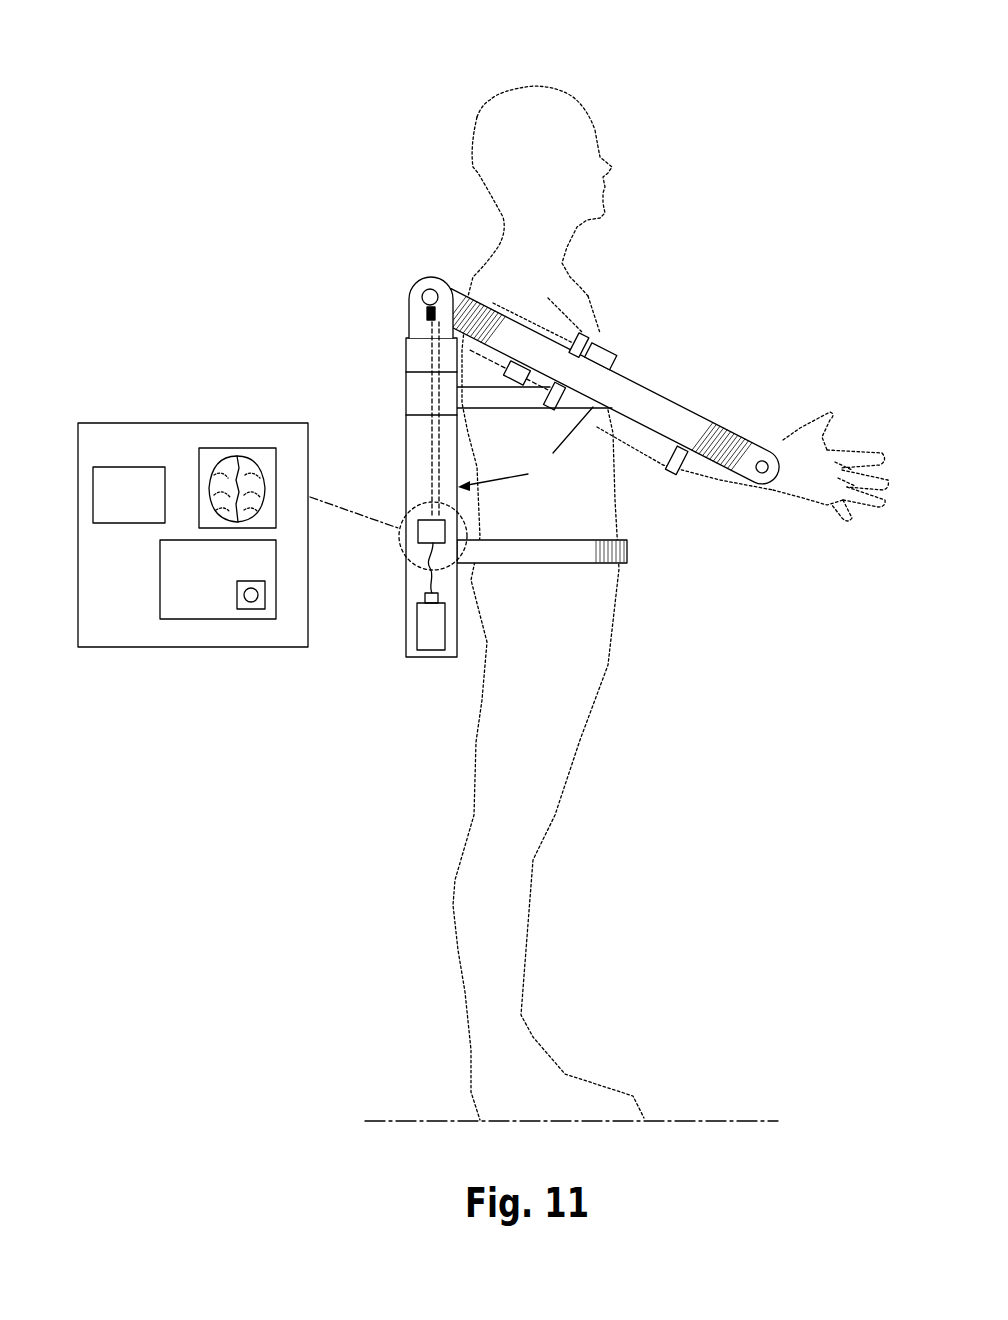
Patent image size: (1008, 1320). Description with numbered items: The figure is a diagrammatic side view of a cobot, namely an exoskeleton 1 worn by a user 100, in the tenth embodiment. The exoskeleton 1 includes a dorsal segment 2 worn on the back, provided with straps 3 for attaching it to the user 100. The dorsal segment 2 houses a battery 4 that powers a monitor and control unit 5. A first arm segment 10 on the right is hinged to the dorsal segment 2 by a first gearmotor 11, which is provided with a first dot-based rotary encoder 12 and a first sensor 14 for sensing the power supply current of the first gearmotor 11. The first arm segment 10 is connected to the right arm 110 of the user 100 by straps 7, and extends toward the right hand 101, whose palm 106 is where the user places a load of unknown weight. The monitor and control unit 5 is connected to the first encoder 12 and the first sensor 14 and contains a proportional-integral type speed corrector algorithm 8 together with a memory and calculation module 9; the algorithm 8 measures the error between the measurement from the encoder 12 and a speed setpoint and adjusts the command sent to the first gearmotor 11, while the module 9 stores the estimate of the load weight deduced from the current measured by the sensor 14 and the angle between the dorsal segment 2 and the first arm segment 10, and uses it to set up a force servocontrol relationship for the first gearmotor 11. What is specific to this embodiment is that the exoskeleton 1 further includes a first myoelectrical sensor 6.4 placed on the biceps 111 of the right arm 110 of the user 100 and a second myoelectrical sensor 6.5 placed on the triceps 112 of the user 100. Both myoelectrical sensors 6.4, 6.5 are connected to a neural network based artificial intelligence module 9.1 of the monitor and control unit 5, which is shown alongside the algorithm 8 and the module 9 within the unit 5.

The user 100 is at (408, 353).
The exoskeleton 1 is at (561, 377).
The dorsal segment 2 is at (415, 390).
The straps 3 is at (523, 547).
The battery 4 is at (425, 627).
The monitor and control unit 5 is at (418, 533).
The first myoelectrical sensor 6.4 is at (615, 350).
The second myoelectrical sensor 6.5 is at (505, 373).
The straps 7 is at (597, 336).
The proportional-integral type speed corrector algorithm 8 is at (93, 497).
The memory and calculation module 9 is at (193, 619).
The neural network based artificial intelligence module 9.1 is at (250, 452).
The first arm segment 10 is at (533, 327).
The first gearmotor 11 is at (420, 278).
The first dot-based rotary encoder 12 is at (420, 293).
The first sensor 14 is at (428, 318).
The right hand 101 is at (833, 520).
The palm 106 is at (838, 443).
The right arm 110 is at (597, 447).
The biceps 111 is at (623, 365).
The triceps 112 is at (470, 352).